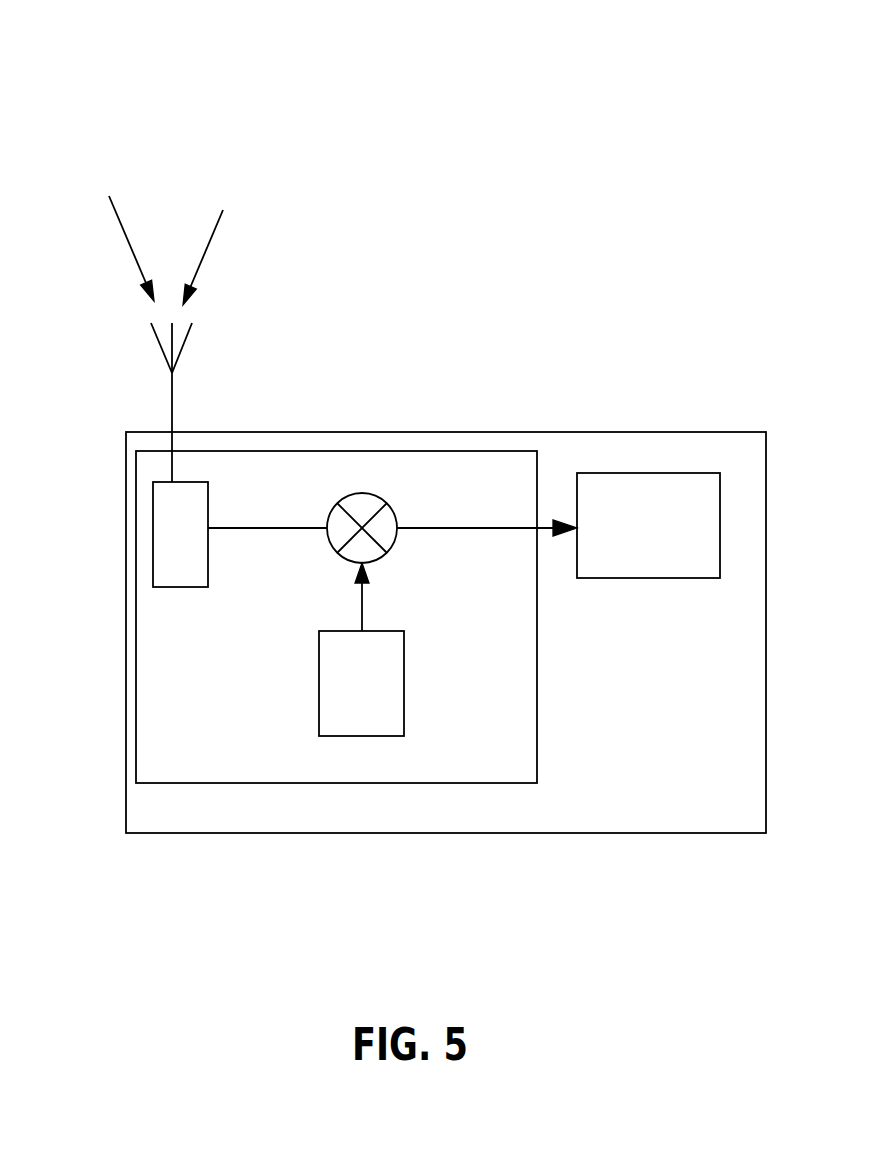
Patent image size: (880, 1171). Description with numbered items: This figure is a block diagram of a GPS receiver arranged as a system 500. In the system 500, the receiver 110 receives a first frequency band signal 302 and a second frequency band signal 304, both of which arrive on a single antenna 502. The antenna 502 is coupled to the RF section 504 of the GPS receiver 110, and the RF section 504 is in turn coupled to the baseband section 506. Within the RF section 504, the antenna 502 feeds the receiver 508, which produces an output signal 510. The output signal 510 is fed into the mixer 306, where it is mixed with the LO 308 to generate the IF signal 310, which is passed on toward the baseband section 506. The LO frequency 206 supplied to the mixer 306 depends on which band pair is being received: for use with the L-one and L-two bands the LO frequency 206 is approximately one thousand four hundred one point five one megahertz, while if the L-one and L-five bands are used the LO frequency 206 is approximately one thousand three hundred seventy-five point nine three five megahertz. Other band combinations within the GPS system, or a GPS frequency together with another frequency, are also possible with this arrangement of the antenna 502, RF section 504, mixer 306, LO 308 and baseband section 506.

The system 500 is at (461, 112).
The receiver 110 is at (126, 632).
The RF section 504 is at (537, 663).
The first frequency band signal 302 is at (128, 245).
The second frequency band signal 304 is at (200, 268).
The antenna 502 is at (172, 398).
The receiver 508 is at (180, 587).
The output signal 510 is at (272, 528).
The mixer 306 is at (350, 496).
The IF signal 310 is at (472, 528).
The LO frequency 206 is at (365, 597).
The LO 308 is at (405, 682).
The baseband section 506 is at (648, 578).